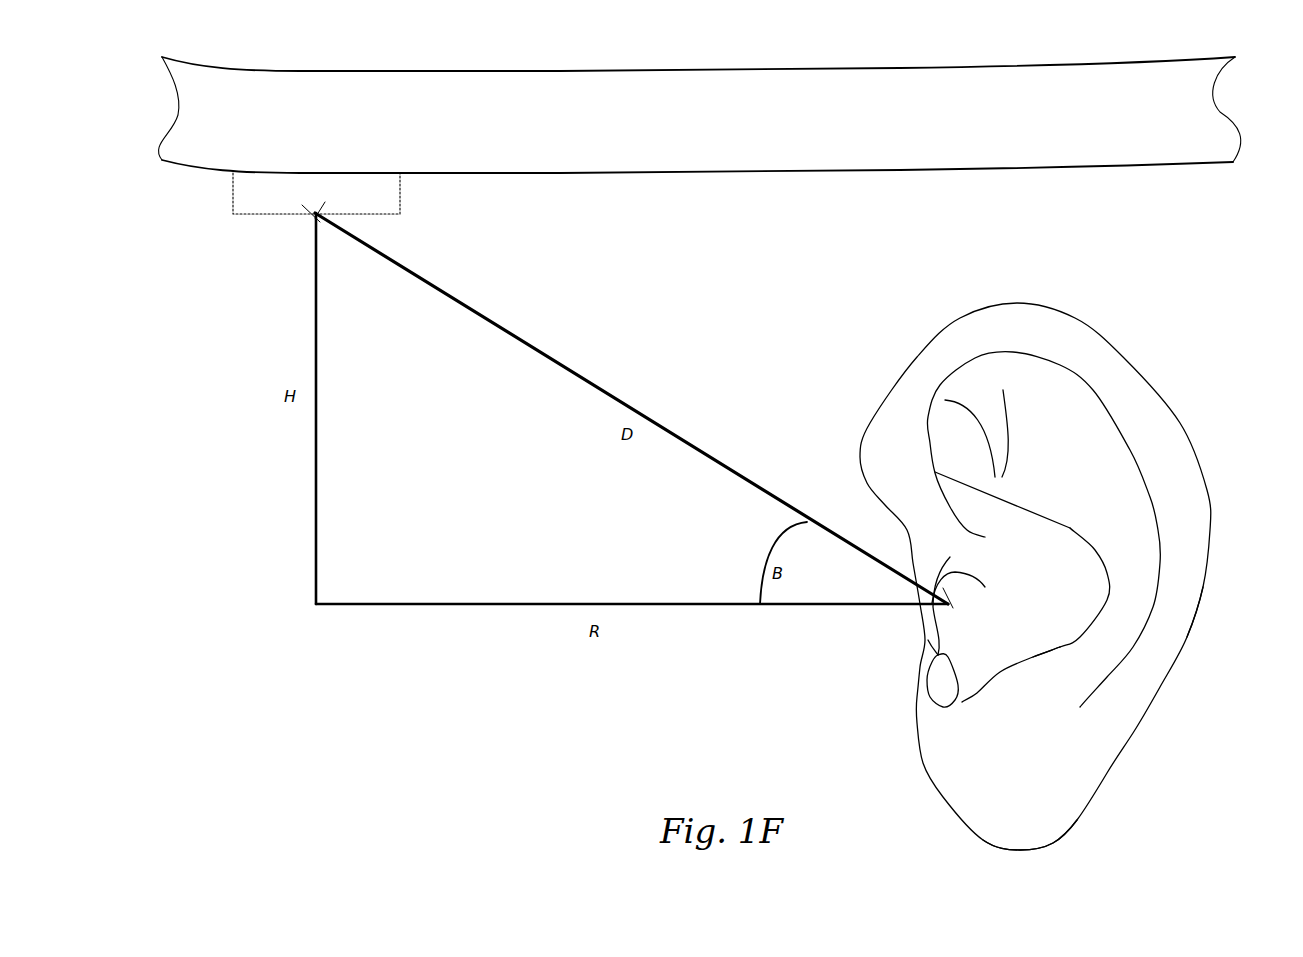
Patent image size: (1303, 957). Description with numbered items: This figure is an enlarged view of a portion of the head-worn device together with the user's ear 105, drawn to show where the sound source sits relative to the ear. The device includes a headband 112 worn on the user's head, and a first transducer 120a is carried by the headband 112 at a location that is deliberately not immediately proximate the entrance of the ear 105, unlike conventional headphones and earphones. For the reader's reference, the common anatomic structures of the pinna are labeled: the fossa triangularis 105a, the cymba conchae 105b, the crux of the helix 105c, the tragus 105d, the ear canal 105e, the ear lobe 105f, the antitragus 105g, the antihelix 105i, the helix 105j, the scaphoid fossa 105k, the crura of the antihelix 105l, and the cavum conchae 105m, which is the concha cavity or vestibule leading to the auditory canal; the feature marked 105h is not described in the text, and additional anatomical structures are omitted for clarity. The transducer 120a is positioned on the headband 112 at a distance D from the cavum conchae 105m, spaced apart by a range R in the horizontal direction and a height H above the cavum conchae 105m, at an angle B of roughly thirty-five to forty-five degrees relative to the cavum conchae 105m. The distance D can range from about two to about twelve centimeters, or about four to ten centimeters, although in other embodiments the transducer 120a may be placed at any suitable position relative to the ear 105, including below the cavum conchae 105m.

The headband 112 is at (763, 133).
The first transducer 120a is at (403, 193).
The ear 105 is at (1085, 298).
The fossa triangularis 105a is at (975, 437).
The cymba conchae 105b is at (990, 497).
The crux of the helix 105c is at (950, 557).
The tragus 105d is at (928, 640).
The ear canal 105e is at (958, 704).
The ear lobe 105f is at (1047, 828).
The antitragus 105g is at (1000, 673).
The concha rim 105h is at (1027, 632).
The antihelix 105i is at (1075, 463).
The helix 105j is at (1185, 570).
The scaphoid fossa 105k is at (1140, 478).
The crura of an antihelix 105l is at (973, 407).
The cavum conchae 105m is at (967, 604).